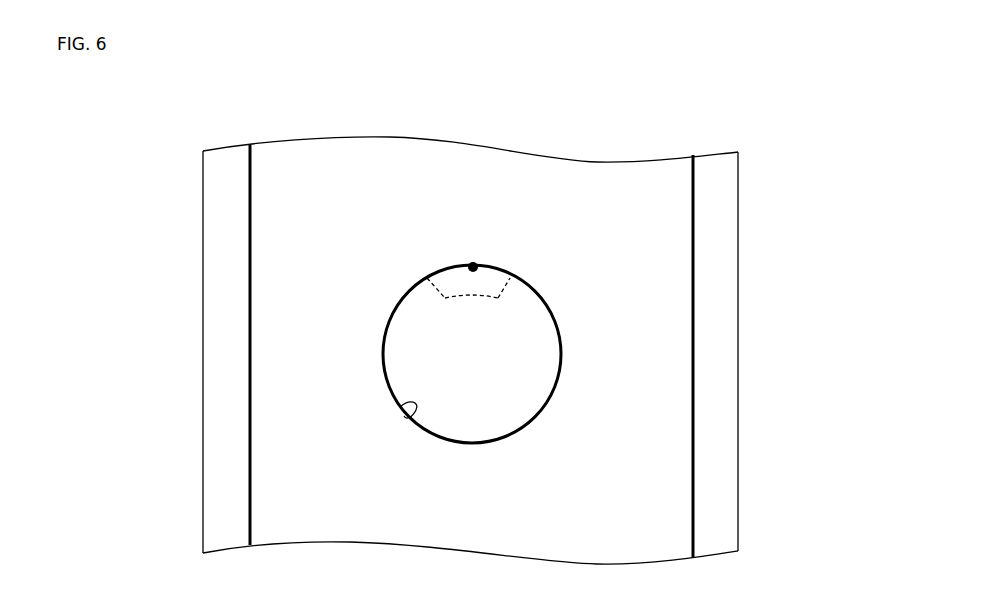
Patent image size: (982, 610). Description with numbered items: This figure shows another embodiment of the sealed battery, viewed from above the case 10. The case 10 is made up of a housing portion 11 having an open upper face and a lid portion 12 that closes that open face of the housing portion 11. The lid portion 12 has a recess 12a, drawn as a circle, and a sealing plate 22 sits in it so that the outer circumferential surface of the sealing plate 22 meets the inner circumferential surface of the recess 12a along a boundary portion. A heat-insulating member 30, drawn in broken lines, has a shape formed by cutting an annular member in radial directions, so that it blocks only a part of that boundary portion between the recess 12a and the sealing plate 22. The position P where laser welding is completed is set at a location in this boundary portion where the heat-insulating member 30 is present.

The case 10 is at (797, 308).
The housing portion 11 is at (730, 367).
The lid portion 12 is at (677, 315).
The recess 12a is at (400, 407).
The sealing plate 22 is at (543, 313).
The heat-insulating member 30 is at (440, 293).
The position where laser welding is completed P is at (472, 254).